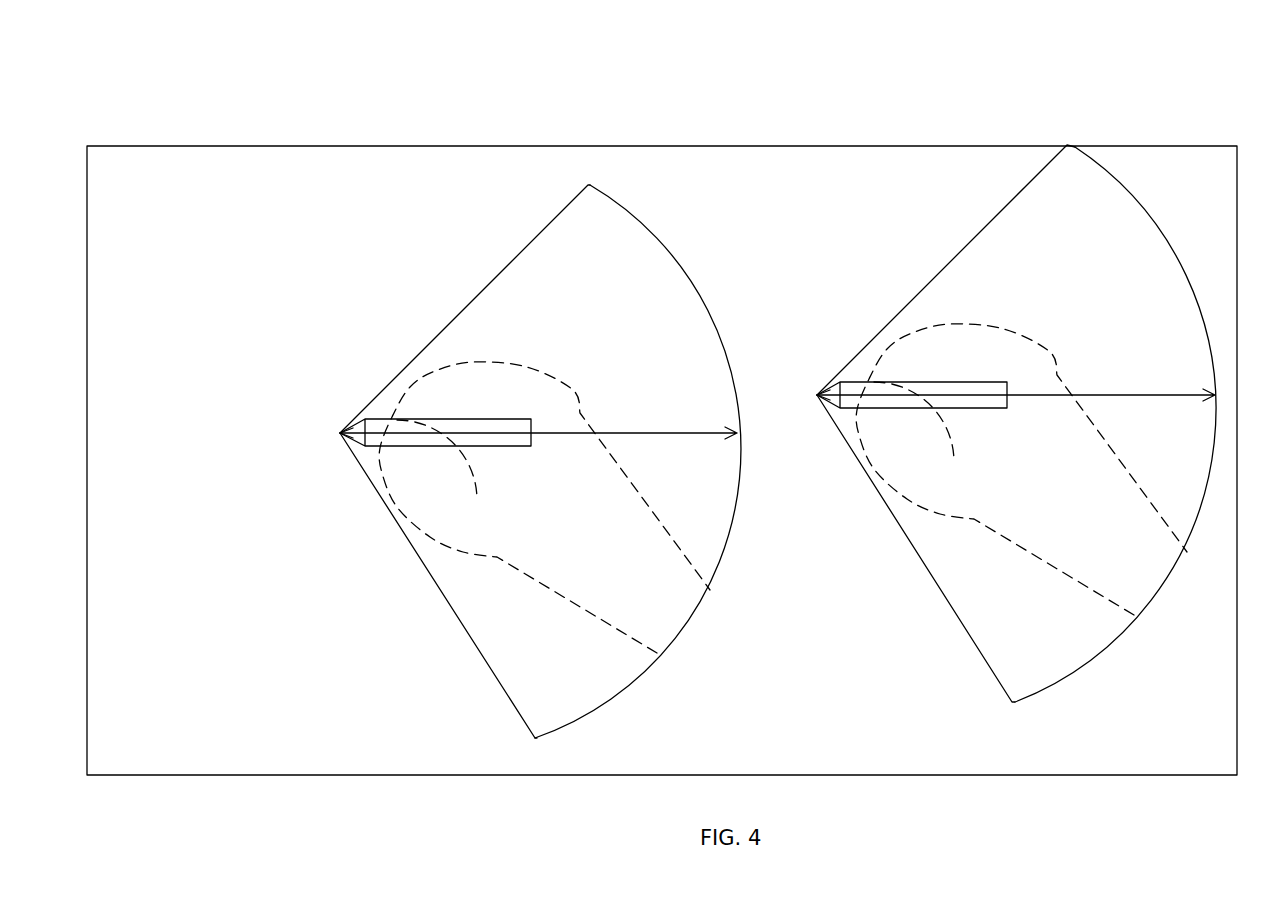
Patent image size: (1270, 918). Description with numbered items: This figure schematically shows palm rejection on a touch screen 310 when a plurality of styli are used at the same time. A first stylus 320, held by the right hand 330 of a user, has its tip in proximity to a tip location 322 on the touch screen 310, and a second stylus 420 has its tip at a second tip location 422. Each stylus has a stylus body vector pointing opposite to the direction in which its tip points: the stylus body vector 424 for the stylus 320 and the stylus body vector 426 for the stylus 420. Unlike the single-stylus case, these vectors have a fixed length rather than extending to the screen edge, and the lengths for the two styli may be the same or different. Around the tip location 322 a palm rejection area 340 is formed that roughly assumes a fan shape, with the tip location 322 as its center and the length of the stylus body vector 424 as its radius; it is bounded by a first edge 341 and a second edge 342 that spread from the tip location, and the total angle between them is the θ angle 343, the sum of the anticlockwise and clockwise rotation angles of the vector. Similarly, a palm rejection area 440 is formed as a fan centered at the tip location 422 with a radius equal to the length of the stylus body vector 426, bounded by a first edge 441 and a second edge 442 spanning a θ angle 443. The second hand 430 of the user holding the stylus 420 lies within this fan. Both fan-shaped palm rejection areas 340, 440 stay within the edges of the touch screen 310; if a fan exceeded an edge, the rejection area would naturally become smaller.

The touch screen 310 is at (113, 146).
The stylus 320 is at (455, 418).
The tip location 322 is at (340, 433).
The right hand 330 is at (468, 552).
The palm rejection area 340 is at (540, 420).
The first edge 341 is at (520, 250).
The second edge 342 is at (510, 703).
The θ angle 343 is at (642, 203).
The stylus body vector 424 is at (553, 433).
The stylus 420 is at (930, 380).
The tip location 422 is at (815, 393).
The stylus body vector 426 is at (1038, 393).
The second optical element (dashed) 430 is at (945, 513).
The palm rejection area 440 is at (1016, 383).
The upper boundary of second light emitting region 441 is at (997, 208).
The lower boundary of second light emitting region 442 is at (987, 663).
The arc boundary of second light emitting region 443 is at (1118, 153).